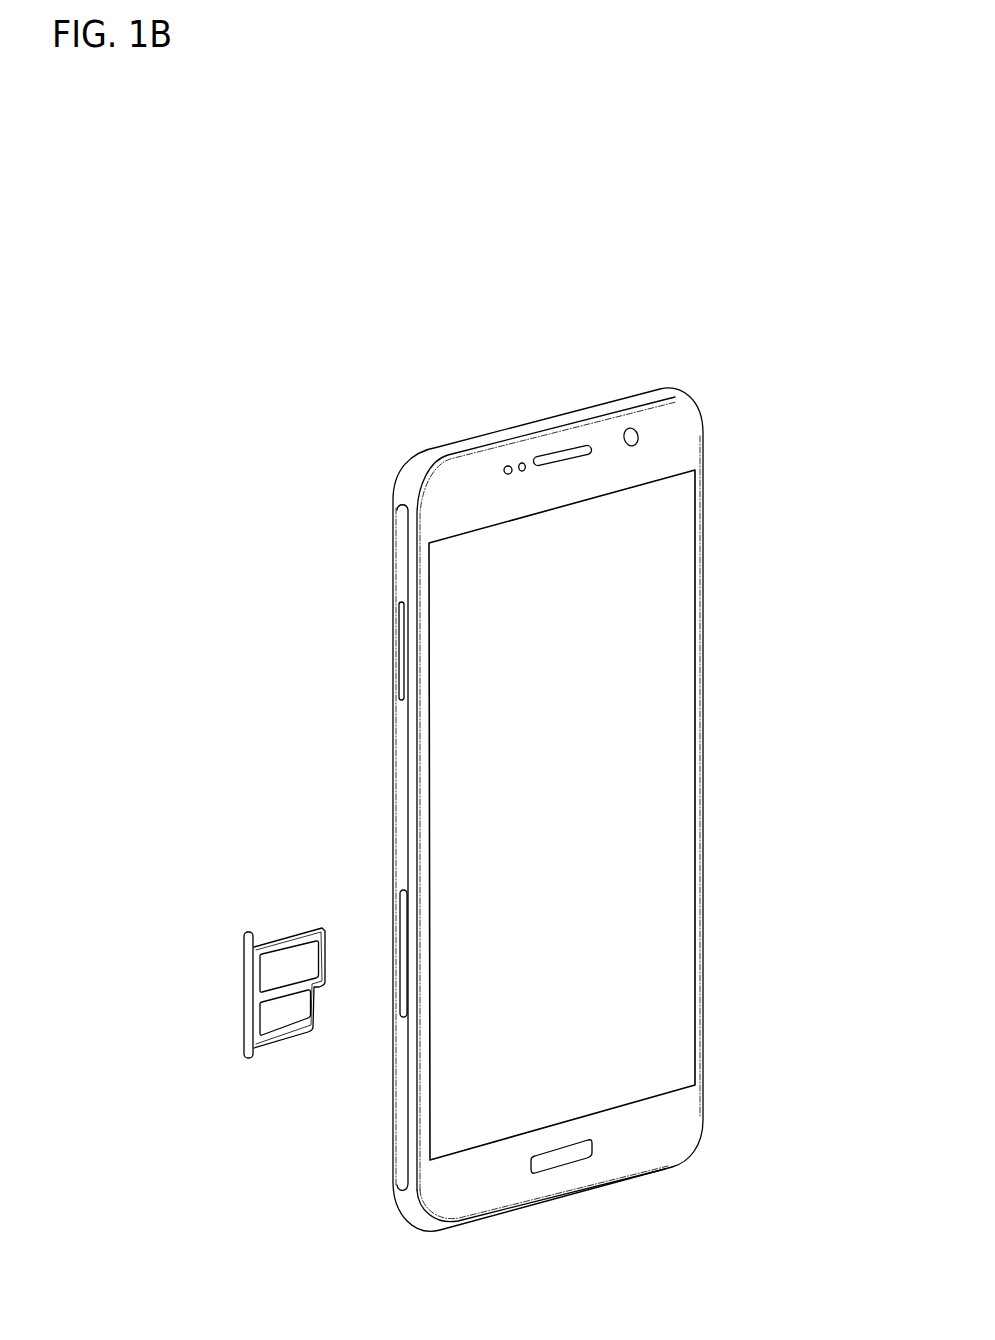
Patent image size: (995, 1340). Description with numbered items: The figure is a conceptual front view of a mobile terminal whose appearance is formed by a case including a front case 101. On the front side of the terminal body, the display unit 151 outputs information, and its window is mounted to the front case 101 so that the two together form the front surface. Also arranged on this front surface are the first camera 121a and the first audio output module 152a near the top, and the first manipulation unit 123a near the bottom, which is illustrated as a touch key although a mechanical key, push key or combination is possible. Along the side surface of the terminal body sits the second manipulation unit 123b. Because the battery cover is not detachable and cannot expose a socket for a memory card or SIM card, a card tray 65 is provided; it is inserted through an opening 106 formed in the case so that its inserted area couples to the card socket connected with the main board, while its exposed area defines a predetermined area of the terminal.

The front case 101 is at (667, 448).
The display unit 151 is at (667, 660).
The first camera 121a is at (508, 466).
The first audio output module 152a is at (562, 455).
The second manipulation unit 123b is at (400, 660).
The opening 106 is at (400, 907).
The first manipulation unit 123a is at (550, 1165).
The card tray 65 is at (248, 1002).